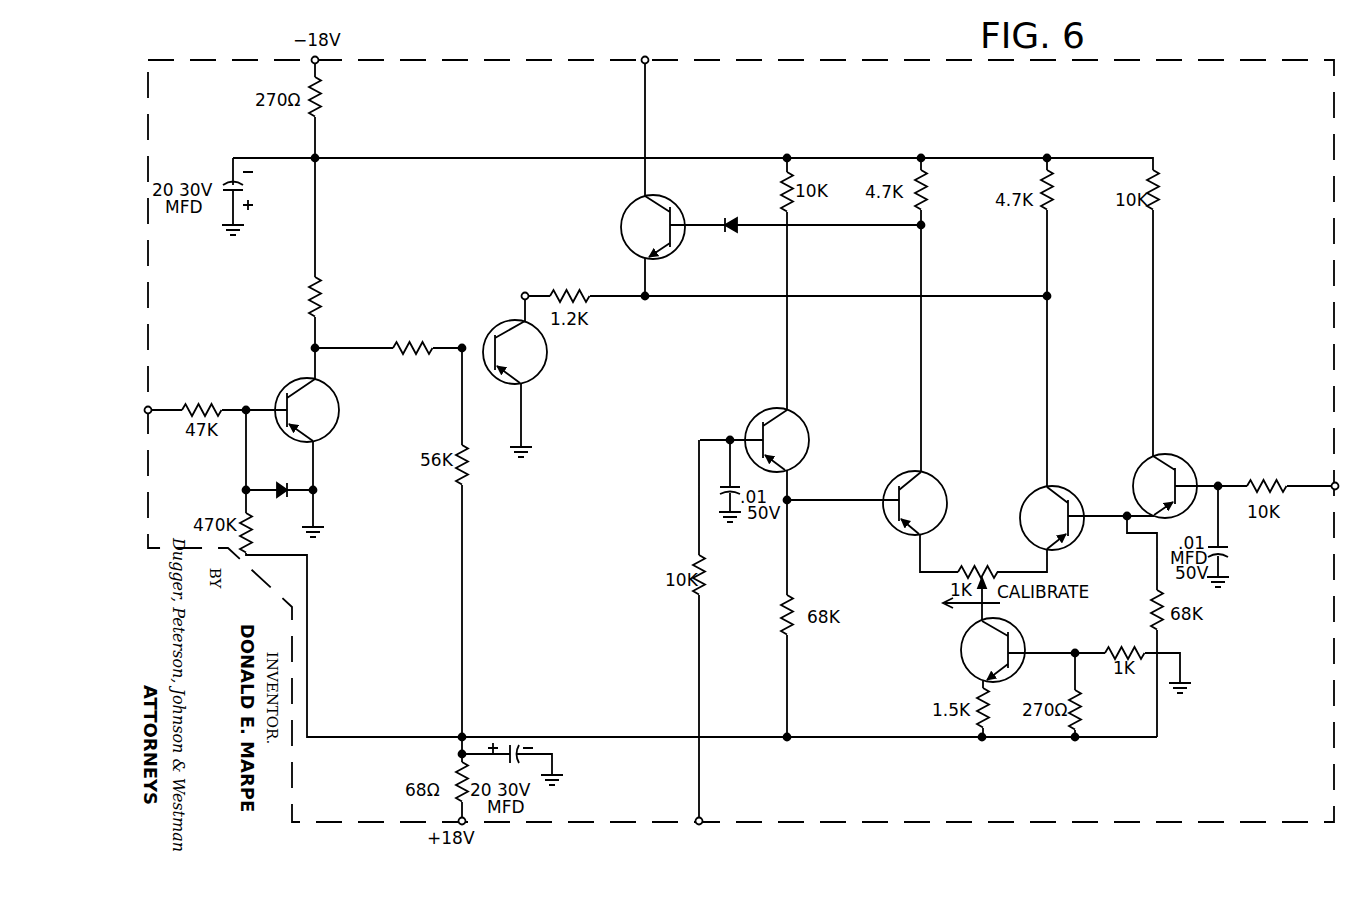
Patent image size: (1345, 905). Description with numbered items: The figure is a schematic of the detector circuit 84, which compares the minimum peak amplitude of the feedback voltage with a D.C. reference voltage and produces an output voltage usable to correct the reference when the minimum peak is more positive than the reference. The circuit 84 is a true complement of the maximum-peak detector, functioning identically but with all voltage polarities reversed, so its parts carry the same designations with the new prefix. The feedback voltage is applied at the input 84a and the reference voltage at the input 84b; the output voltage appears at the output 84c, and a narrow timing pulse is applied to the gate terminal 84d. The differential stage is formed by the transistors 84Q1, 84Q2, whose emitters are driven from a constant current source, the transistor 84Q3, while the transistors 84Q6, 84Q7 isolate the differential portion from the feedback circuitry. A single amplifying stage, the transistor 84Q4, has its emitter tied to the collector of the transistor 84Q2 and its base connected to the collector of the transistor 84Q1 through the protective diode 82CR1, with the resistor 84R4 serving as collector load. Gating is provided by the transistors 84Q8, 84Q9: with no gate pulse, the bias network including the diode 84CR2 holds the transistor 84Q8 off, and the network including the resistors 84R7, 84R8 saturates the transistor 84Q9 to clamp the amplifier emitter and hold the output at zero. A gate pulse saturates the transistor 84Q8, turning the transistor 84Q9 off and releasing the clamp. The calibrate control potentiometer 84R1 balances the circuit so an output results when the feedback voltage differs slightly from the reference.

The detector circuit 84 is at (323, 828).
The input 84a is at (1333, 484).
The input 84b is at (703, 818).
The output 84c is at (645, 57).
The gate terminal 84d is at (150, 413).
The resistor 84R7 is at (321, 293).
The resistor 84R8 is at (426, 346).
The collector load resistor 84R4 is at (1280, 467).
The calibrate control potentiometer 84R1 is at (970, 565).
The diode 84CR2 is at (292, 488).
The diode 82CR1 is at (752, 206).
The transistor 84Q4 is at (663, 256).
The transistor 84Q9 is at (537, 370).
The transistor 84Q8 is at (340, 421).
The transistor 84Q6 is at (803, 424).
The transistor 84Q1 is at (938, 478).
The transistor 84Q2 is at (1035, 493).
The transistor 84Q7 is at (1178, 457).
The transistor 84Q3 is at (1017, 632).